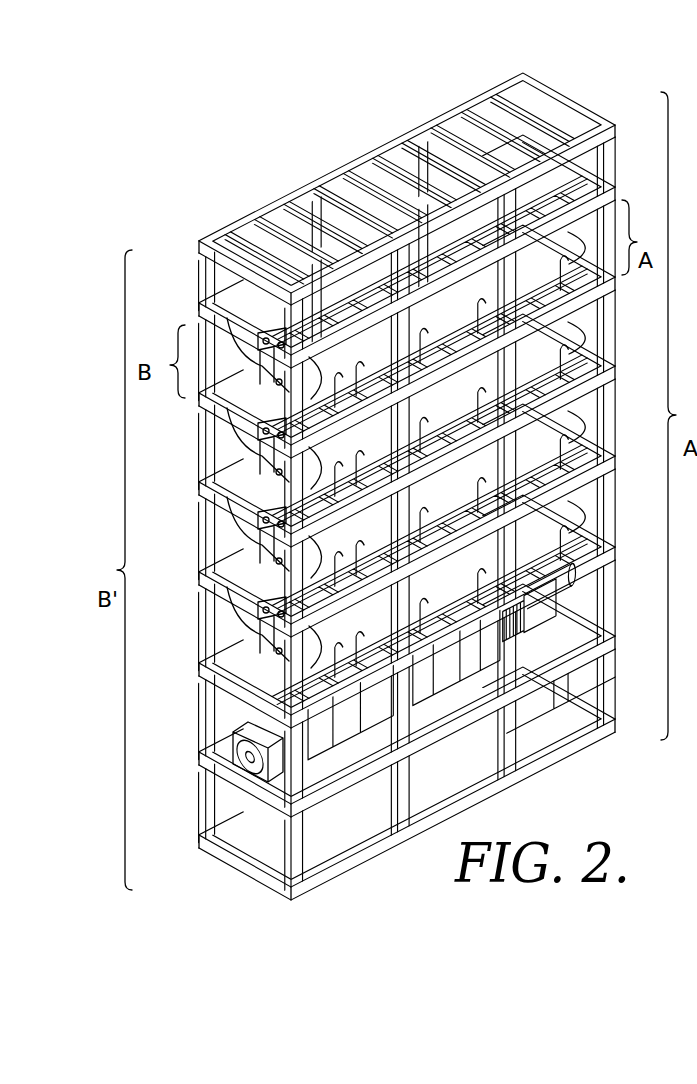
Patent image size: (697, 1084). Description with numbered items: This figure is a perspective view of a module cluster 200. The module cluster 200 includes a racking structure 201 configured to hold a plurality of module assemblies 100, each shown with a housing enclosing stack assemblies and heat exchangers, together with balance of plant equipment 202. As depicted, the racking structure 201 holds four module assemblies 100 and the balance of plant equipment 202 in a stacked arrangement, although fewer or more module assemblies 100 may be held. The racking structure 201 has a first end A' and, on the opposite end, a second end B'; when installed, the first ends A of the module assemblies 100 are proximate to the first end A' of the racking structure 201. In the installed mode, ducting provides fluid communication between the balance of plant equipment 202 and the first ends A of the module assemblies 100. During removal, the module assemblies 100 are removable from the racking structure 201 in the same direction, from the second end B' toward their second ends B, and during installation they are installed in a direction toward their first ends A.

The module assembly 100 is at (230, 352).
The module cluster 200 is at (383, 486).
The racking structure 201 is at (569, 100).
The balance of plant equipment 202 is at (233, 745).